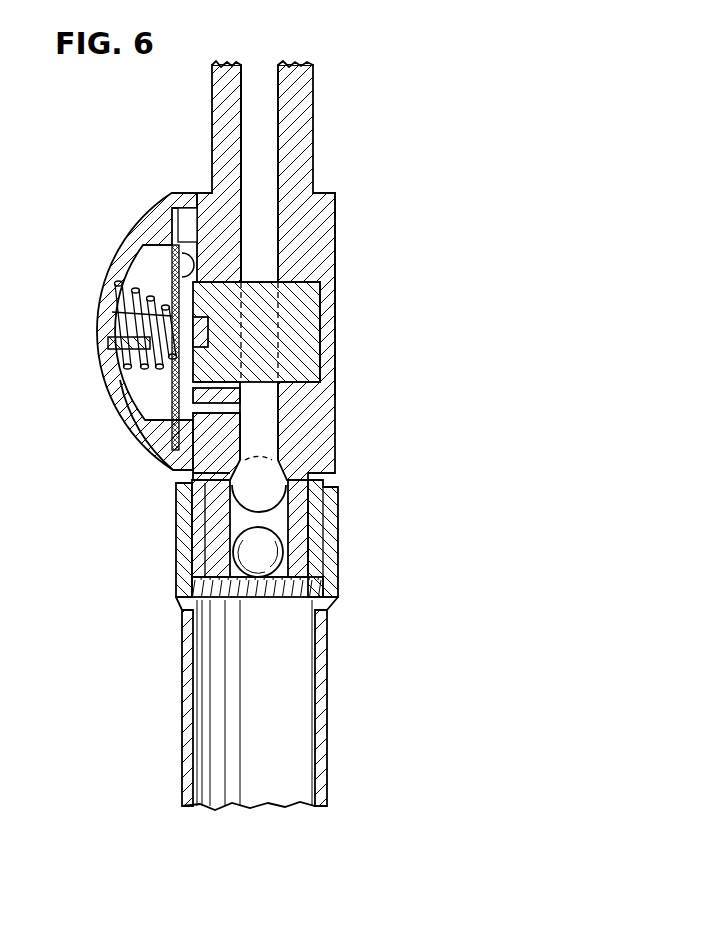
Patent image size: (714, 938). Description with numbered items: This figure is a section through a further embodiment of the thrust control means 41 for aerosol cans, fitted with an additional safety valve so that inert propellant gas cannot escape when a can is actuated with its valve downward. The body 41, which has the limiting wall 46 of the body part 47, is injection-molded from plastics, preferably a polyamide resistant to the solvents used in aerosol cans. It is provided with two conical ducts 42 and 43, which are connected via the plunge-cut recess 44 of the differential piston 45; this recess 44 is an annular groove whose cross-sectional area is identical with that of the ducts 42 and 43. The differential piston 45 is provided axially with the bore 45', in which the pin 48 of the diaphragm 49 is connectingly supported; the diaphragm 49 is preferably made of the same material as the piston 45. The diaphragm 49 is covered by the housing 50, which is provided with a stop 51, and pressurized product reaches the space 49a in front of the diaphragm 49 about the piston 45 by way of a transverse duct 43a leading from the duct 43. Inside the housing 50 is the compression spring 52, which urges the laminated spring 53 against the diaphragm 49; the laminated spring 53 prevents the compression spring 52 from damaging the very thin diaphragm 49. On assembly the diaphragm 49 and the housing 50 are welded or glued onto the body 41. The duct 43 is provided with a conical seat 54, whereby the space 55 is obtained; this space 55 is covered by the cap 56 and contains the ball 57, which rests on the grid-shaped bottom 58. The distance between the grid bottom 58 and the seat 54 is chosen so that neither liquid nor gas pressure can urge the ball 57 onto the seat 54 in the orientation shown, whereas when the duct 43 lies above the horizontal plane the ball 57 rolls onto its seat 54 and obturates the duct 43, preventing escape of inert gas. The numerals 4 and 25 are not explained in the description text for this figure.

The valve assembly 4 is at (301, 284).
The tube 25 is at (324, 743).
The thrust control means body 41 is at (306, 117).
The conical duct 42 is at (274, 82).
The conical duct 43 is at (268, 441).
The transverse duct 43a is at (208, 474).
The plunge-cut recess 44 is at (248, 377).
The differential piston 45 is at (298, 332).
The bore 45' is at (107, 347).
The limiting wall 46 is at (333, 283).
The body part 47 is at (311, 208).
The pin 48 is at (168, 324).
The diaphragm 49 is at (164, 240).
The space 49a is at (205, 250).
The housing 50 is at (167, 440).
The stop 51 is at (148, 334).
The compression spring 52 is at (125, 366).
The laminated spring 53 is at (172, 393).
The conical seat 54 is at (212, 487).
The space 55 is at (198, 503).
The cap 56 is at (181, 598).
The ball 57 is at (278, 549).
The grid-shaped bottom 58 is at (262, 598).